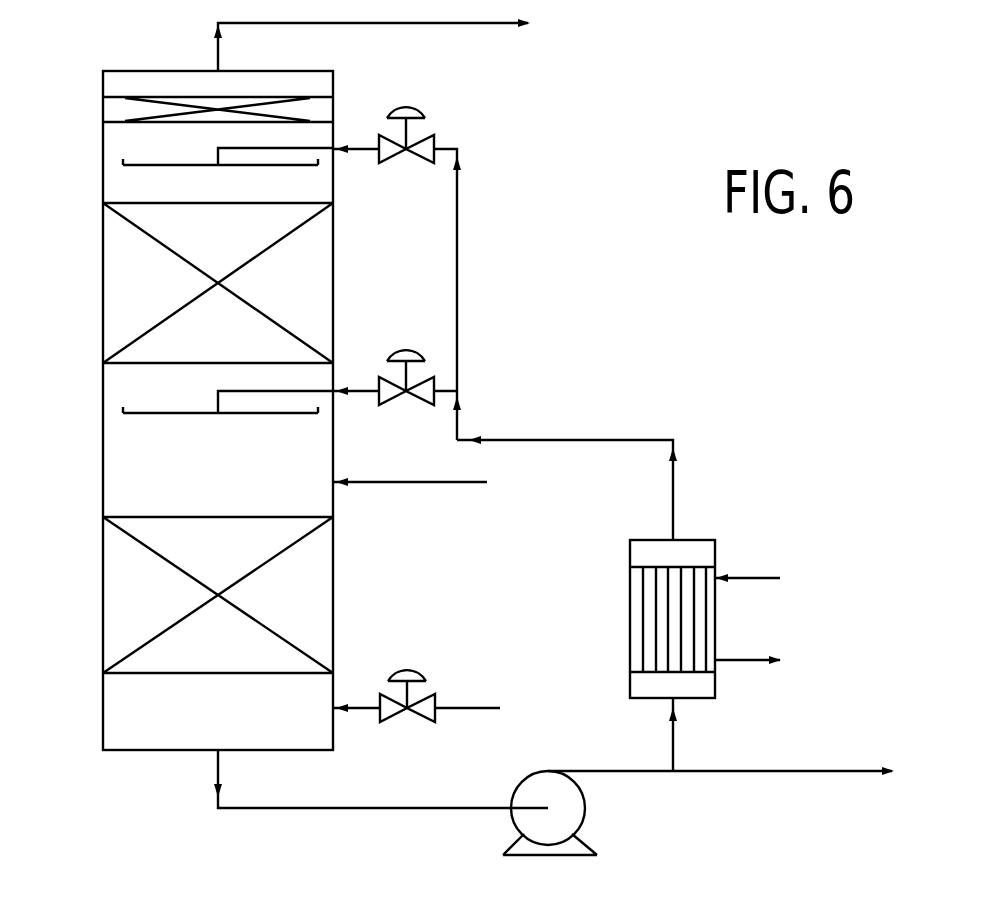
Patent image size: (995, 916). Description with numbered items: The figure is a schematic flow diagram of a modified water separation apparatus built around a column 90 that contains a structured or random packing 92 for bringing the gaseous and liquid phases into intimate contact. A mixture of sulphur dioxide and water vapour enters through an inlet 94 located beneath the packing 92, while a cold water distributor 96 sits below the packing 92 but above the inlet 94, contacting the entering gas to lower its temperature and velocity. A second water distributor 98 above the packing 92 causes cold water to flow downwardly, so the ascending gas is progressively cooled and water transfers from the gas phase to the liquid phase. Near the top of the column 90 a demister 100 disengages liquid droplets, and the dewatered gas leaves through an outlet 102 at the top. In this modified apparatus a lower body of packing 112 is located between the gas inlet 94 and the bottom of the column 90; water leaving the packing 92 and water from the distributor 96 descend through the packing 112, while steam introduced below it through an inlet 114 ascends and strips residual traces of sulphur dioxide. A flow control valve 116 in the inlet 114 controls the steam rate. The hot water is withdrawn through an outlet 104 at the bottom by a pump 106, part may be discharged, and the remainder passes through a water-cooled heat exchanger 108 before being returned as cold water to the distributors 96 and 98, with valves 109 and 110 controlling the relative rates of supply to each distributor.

The column 90 is at (84, 350).
The packing 92 is at (117, 292).
The inlet 94 is at (453, 482).
The cold water distributor 96 is at (123, 413).
The second water distributor 98 is at (123, 165).
The demister 100 is at (115, 110).
The outlet 102 is at (218, 52).
The outlet 104 is at (218, 766).
The pump 106 is at (526, 818).
The heat exchanger 108 is at (638, 604).
The valve 109 is at (390, 385).
The valve 110 is at (427, 143).
The lower body of packing 112 is at (120, 580).
The inlet 114 is at (462, 708).
The flow control valve 116 is at (430, 700).